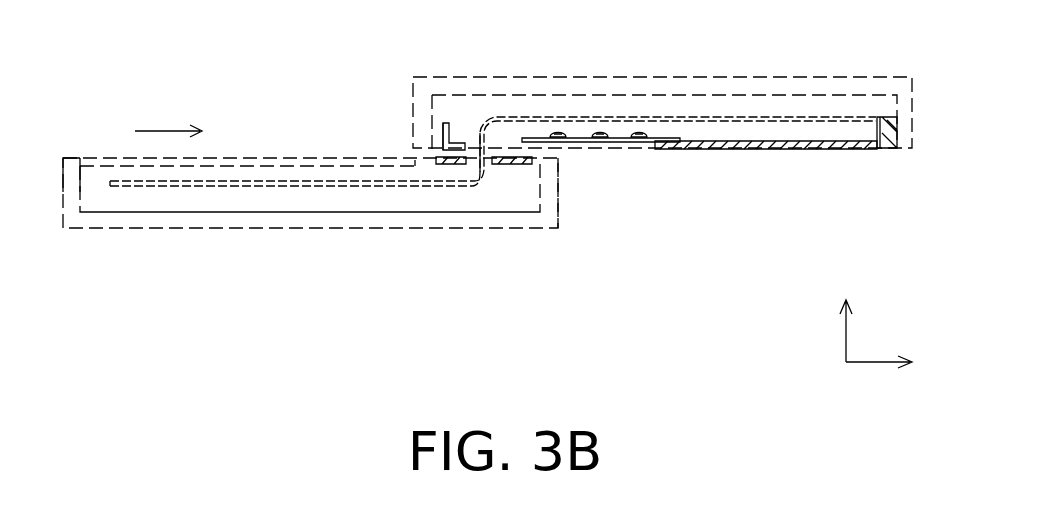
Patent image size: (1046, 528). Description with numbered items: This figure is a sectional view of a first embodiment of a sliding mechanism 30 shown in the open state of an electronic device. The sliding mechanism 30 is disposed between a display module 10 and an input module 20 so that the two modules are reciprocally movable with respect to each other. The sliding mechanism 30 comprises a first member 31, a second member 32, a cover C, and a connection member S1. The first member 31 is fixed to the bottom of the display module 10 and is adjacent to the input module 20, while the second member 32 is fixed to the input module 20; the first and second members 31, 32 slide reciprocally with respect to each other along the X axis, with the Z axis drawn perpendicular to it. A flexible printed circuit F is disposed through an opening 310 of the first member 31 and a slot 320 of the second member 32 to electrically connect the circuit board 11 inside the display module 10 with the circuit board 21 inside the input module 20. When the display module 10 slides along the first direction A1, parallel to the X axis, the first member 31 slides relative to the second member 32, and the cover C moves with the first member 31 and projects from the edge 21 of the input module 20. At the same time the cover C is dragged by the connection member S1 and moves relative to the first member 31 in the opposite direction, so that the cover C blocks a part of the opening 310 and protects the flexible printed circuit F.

The display module 10 is at (884, 74).
The circuit board 11 is at (812, 117).
The input module 20 is at (316, 240).
The circuit board 21 is at (150, 186).
The sliding mechanism 30 is at (829, 167).
The first member 31 is at (440, 128).
The second member 32 is at (517, 165).
The opening 310 is at (474, 150).
The slot 320 is at (492, 165).
The flexible printed circuit F is at (531, 120).
The connection member S1 is at (639, 131).
The cover C is at (601, 141).
The first direction A1 is at (168, 114).
The Z axis Z is at (848, 312).
The X axis X is at (892, 362).